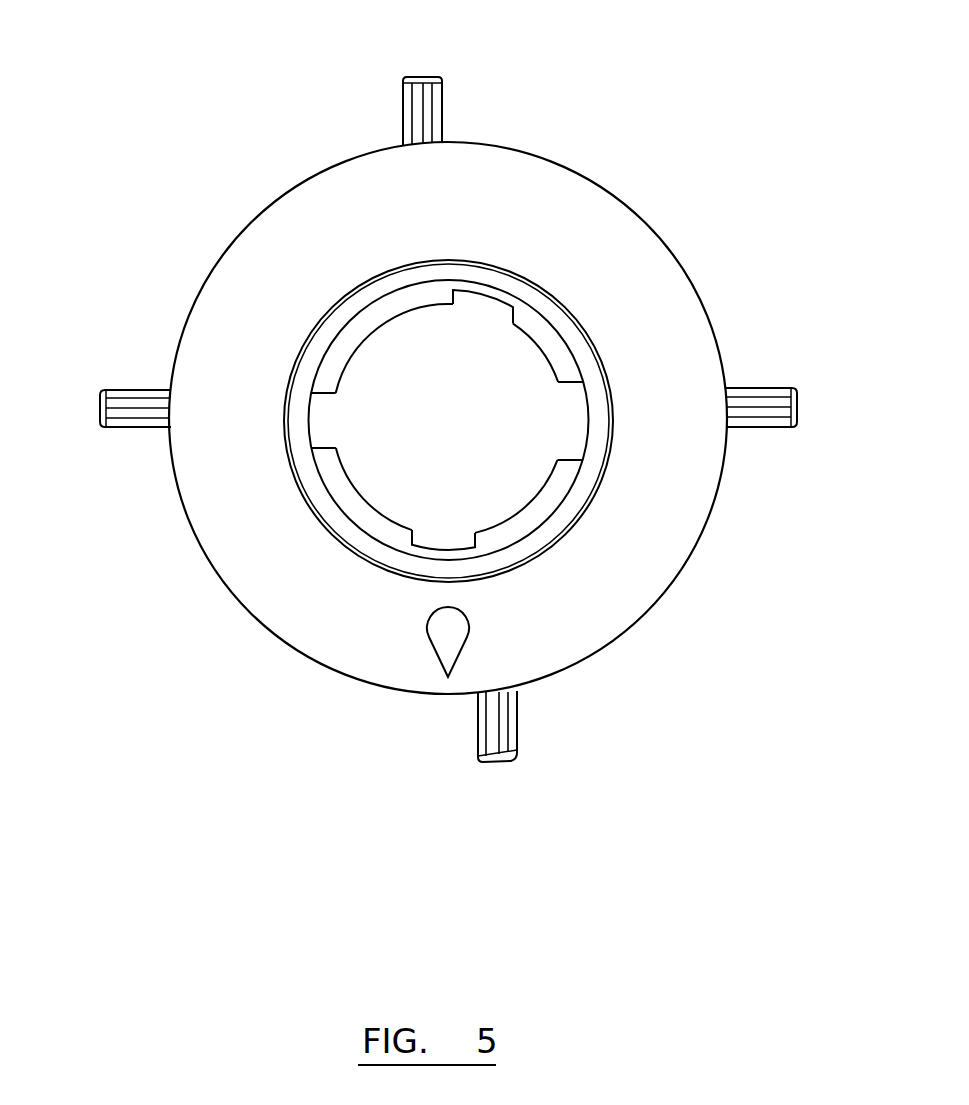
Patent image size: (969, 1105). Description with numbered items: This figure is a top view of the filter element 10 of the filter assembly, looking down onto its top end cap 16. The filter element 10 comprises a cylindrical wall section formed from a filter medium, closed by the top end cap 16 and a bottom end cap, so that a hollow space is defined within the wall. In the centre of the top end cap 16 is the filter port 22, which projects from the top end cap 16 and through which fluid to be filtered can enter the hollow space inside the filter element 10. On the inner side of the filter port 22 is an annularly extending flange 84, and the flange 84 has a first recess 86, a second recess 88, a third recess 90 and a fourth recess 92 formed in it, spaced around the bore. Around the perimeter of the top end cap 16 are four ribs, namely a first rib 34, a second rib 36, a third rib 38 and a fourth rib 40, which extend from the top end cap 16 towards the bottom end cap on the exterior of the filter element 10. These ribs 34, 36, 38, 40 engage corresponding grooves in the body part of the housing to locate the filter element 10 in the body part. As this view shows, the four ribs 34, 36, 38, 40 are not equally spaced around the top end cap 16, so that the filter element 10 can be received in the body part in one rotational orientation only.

The filter element 10 is at (455, 426).
The top end cap 16 is at (700, 478).
The filter port 22 is at (583, 353).
The first rib 34 is at (100, 403).
The second rib 36 is at (413, 78).
The third rib 38 is at (798, 403).
The fourth rib 40 is at (503, 762).
The flange 84 is at (552, 347).
The first recess 86 is at (315, 415).
The second recess 88 is at (476, 297).
The third recess 90 is at (577, 430).
The fourth recess 92 is at (445, 543).